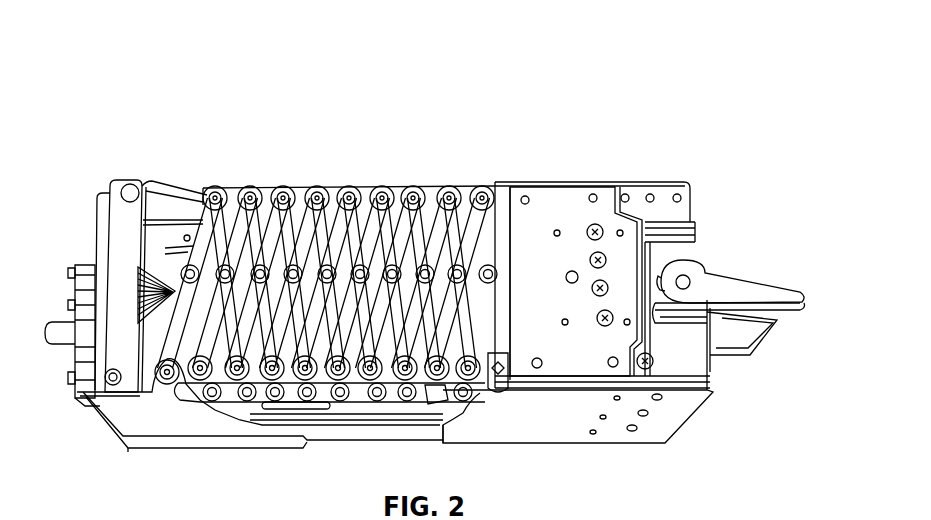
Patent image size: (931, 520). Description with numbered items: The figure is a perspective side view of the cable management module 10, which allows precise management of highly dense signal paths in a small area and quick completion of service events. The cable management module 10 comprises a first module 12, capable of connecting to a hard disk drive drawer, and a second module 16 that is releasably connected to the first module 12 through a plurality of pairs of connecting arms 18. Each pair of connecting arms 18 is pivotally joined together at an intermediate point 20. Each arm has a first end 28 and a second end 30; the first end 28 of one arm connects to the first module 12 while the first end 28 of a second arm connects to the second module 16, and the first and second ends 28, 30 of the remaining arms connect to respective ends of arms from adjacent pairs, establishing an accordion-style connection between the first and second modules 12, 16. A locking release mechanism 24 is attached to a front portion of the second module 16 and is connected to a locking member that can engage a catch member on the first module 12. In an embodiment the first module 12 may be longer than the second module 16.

The cable management module 10 is at (662, 82).
The first module 12 is at (148, 441).
The second module 16 is at (662, 432).
The pairs of connecting arms 18 is at (383, 188).
The intermediate point 20 is at (477, 188).
The locking release mechanism 24 is at (808, 298).
The first end 28 is at (280, 188).
The second end 30 is at (279, 410).